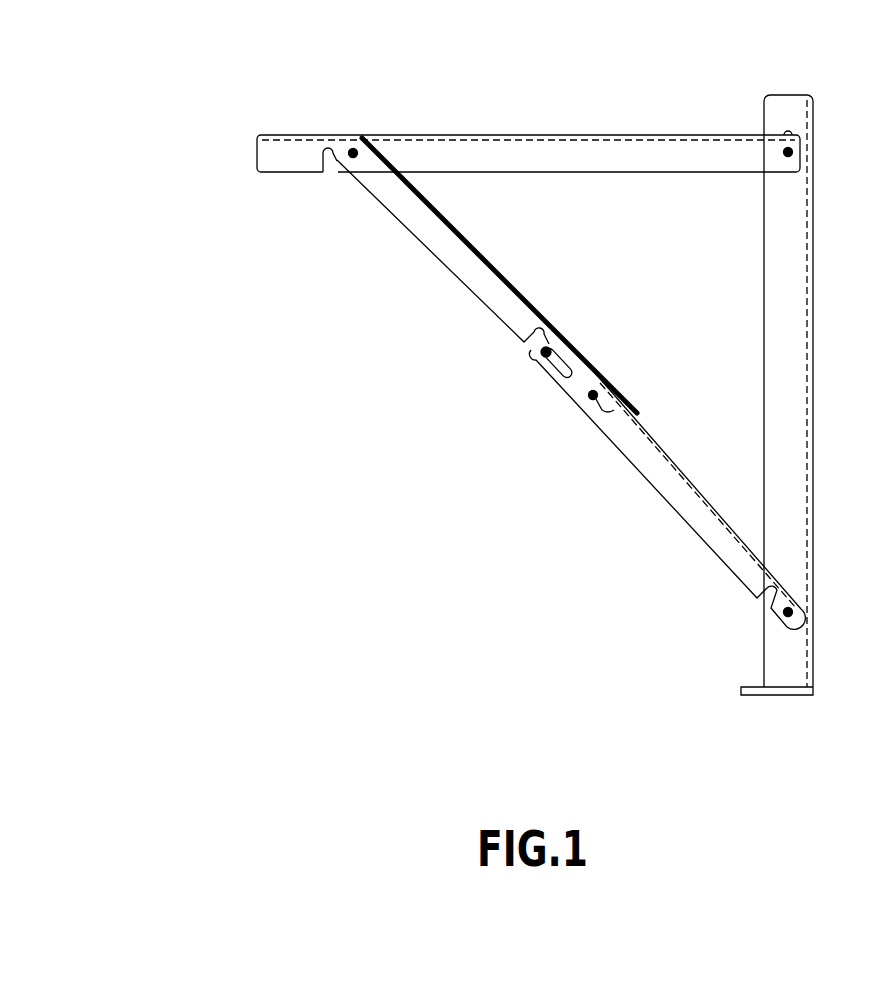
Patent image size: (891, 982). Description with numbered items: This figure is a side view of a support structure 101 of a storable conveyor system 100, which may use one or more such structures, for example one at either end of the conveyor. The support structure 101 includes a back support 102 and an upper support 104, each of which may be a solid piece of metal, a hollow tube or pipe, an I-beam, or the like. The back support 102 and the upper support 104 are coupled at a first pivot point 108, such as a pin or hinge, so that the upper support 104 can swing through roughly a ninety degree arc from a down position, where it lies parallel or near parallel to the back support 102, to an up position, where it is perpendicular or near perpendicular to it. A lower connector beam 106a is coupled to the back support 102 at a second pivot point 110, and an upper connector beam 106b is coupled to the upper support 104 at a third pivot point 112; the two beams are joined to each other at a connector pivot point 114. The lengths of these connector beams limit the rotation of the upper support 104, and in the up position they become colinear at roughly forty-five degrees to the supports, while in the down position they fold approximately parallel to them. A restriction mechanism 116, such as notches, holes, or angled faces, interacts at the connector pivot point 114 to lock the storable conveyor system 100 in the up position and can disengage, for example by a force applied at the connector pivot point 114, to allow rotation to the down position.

The storable conveyor system 100 is at (553, 26).
The support structure 101 is at (236, 104).
The back support 102 is at (790, 352).
The upper support 104 is at (567, 152).
The lower connector beam 106a is at (675, 494).
The upper connector beam 106b is at (432, 247).
The first pivot point 108 is at (790, 152).
The second pivot point 110 is at (790, 612).
The third pivot point 112 is at (353, 148).
The connector pivot point 114 is at (540, 365).
The restriction mechanism 116 is at (605, 395).